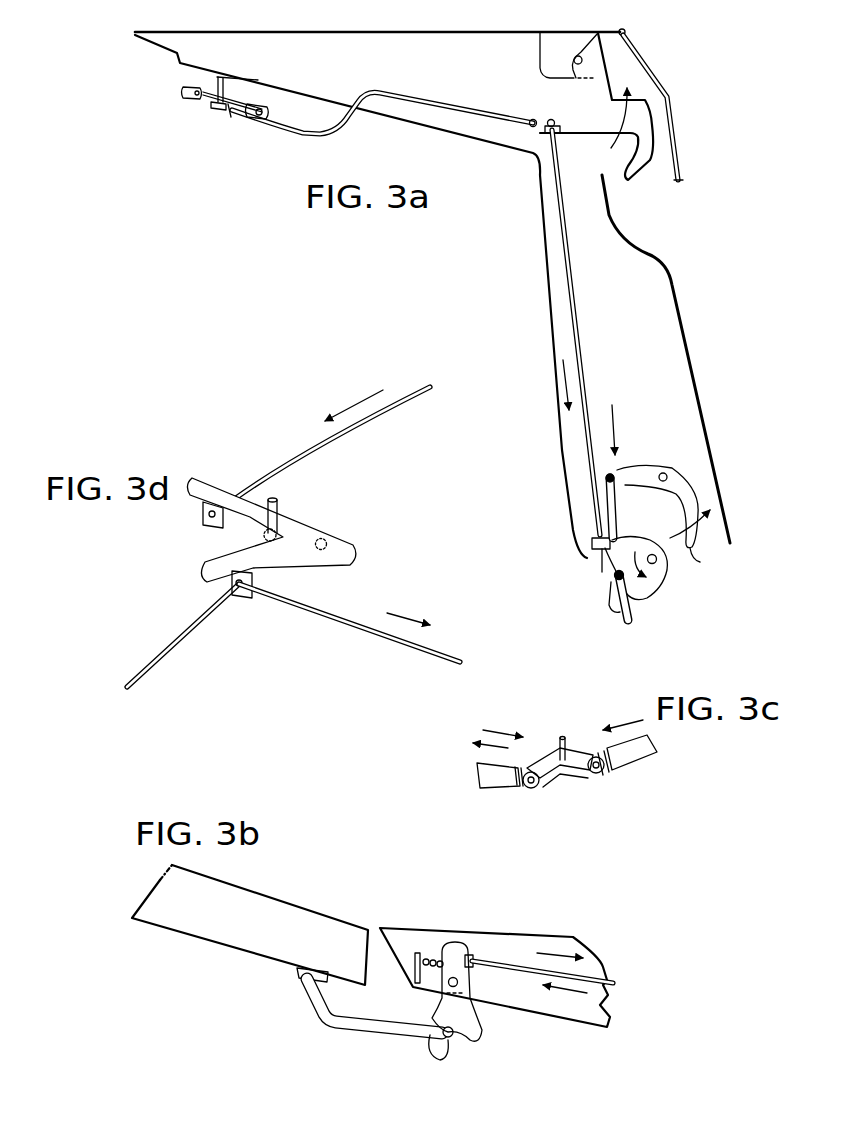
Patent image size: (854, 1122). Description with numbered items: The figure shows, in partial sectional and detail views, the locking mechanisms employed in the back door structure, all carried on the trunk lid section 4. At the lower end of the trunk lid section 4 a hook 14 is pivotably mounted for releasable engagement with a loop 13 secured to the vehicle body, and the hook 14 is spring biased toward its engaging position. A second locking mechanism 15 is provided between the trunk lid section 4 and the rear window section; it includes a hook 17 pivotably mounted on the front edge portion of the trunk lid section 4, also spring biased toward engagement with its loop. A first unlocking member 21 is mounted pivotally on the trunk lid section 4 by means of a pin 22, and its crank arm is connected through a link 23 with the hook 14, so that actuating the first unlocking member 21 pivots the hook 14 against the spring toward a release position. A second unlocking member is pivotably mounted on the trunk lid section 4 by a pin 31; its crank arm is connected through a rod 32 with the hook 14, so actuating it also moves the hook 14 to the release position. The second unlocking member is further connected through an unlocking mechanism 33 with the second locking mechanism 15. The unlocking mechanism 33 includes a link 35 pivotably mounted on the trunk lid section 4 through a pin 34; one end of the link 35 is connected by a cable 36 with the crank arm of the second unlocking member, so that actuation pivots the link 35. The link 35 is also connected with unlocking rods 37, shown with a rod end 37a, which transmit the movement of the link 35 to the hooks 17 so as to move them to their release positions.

In FIG. 3B, the trunk lid section 4 is at (520, 933).
In FIG. 3A, the loop 13 is at (612, 614).
In FIG. 3A, the hook 14 is at (647, 590).
In FIG. 3B, the second locking mechanism 15 is at (377, 1027).
In FIG. 3B, the hook 17 is at (465, 1020).
In FIG. 3A, the first unlocking member 21 is at (692, 498).
In FIG. 3A, the pin 22 is at (673, 468).
In FIG. 3A, the link 23 is at (628, 493).
In FIG. 3A, the pin 31 is at (590, 62).
In FIG. 3A, the rod 32 is at (583, 325).
In FIG. 3A, the unlocking mechanism 33 is at (198, 103).
In FIG. 3D, the unlocking mechanism 33 is at (228, 468).
In FIG. 3A, the pin 34 is at (213, 46).
In FIG. 3D, the pin 34 is at (232, 537).
In FIG. 3A, the link 35 is at (252, 104).
In FIG. 3D, the link 35 is at (295, 520).
In FIG. 3A, the cable 36 is at (420, 103).
In FIG. 3D, the cable 36 is at (327, 612).
In FIG. 3D, the unlocking rods 37 is at (353, 428).
In FIG. 3C, the unlocking rods 37 is at (630, 750).
In FIG. 3B, the unlocking rods 37 is at (603, 977).
In FIG. 3C, the rod end 37a is at (497, 777).